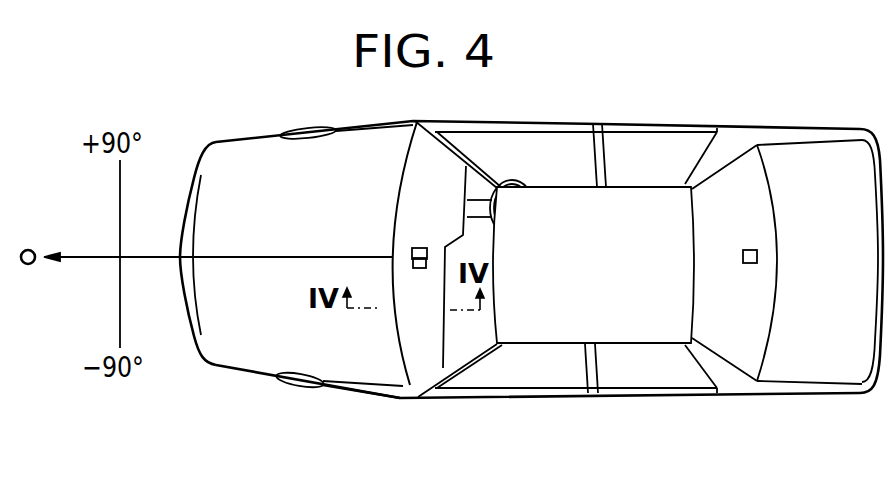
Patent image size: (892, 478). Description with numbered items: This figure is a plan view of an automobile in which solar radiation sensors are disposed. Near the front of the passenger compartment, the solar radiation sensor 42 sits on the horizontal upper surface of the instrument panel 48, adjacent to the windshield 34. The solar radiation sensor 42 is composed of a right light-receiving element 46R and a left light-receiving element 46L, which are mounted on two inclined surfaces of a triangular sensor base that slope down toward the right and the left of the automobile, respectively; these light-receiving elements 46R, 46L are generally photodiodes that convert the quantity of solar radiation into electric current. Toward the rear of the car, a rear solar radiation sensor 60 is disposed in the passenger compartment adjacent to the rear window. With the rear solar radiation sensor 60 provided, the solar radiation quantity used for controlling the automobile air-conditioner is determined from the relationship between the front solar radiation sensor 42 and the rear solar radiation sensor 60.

The windshield 34 is at (410, 188).
The solar radiation sensor 42 is at (388, 272).
The right light-receiving element 46R is at (409, 245).
The left light-receiving element 46L is at (418, 270).
The instrument panel 48 is at (415, 367).
The rear solar radiation sensor 60 is at (757, 257).